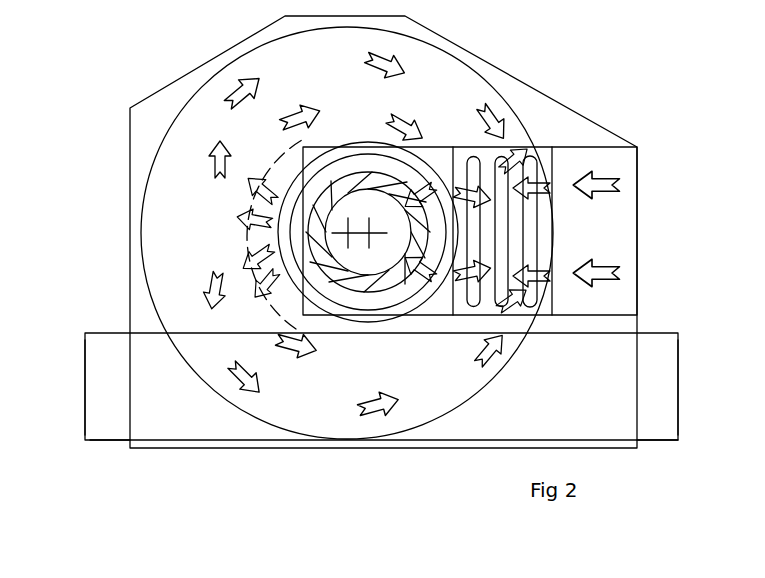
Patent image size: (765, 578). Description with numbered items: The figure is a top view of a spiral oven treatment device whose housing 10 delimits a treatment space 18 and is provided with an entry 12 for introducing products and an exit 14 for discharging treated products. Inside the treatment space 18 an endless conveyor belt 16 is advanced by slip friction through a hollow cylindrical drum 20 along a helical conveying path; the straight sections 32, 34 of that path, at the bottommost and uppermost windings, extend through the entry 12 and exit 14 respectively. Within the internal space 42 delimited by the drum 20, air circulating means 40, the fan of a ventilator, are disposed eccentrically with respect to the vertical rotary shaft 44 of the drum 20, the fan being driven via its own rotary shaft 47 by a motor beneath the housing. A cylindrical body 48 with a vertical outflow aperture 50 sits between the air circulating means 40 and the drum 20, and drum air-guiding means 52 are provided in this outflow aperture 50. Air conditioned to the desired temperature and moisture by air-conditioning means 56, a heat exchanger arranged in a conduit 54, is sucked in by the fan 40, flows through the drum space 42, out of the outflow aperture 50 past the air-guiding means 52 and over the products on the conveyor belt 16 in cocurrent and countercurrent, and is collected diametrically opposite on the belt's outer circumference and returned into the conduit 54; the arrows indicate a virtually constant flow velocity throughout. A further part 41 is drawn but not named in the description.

The housing 10 is at (540, 92).
The entry 12 is at (641, 347).
The exit 14 is at (100, 358).
The endless conveyor belt 16 is at (675, 440).
The treatment space 18 is at (338, 83).
The hollow cylindrical drum 20 is at (349, 141).
The straight section 32 is at (673, 350).
The straight section 34 is at (92, 405).
The air circulating means 40 is at (388, 177).
The fan shroud 41 is at (305, 278).
The internal space 42 is at (338, 179).
The vertical rotary shaft 44 is at (347, 242).
The rotary shaft 47 is at (368, 242).
The cylindrical body 48 is at (333, 143).
The vertical outflow aperture 50 is at (238, 172).
The drum air-guiding means 52 is at (250, 250).
The conduit 54 is at (623, 241).
The air-conditioning means 56 is at (552, 157).